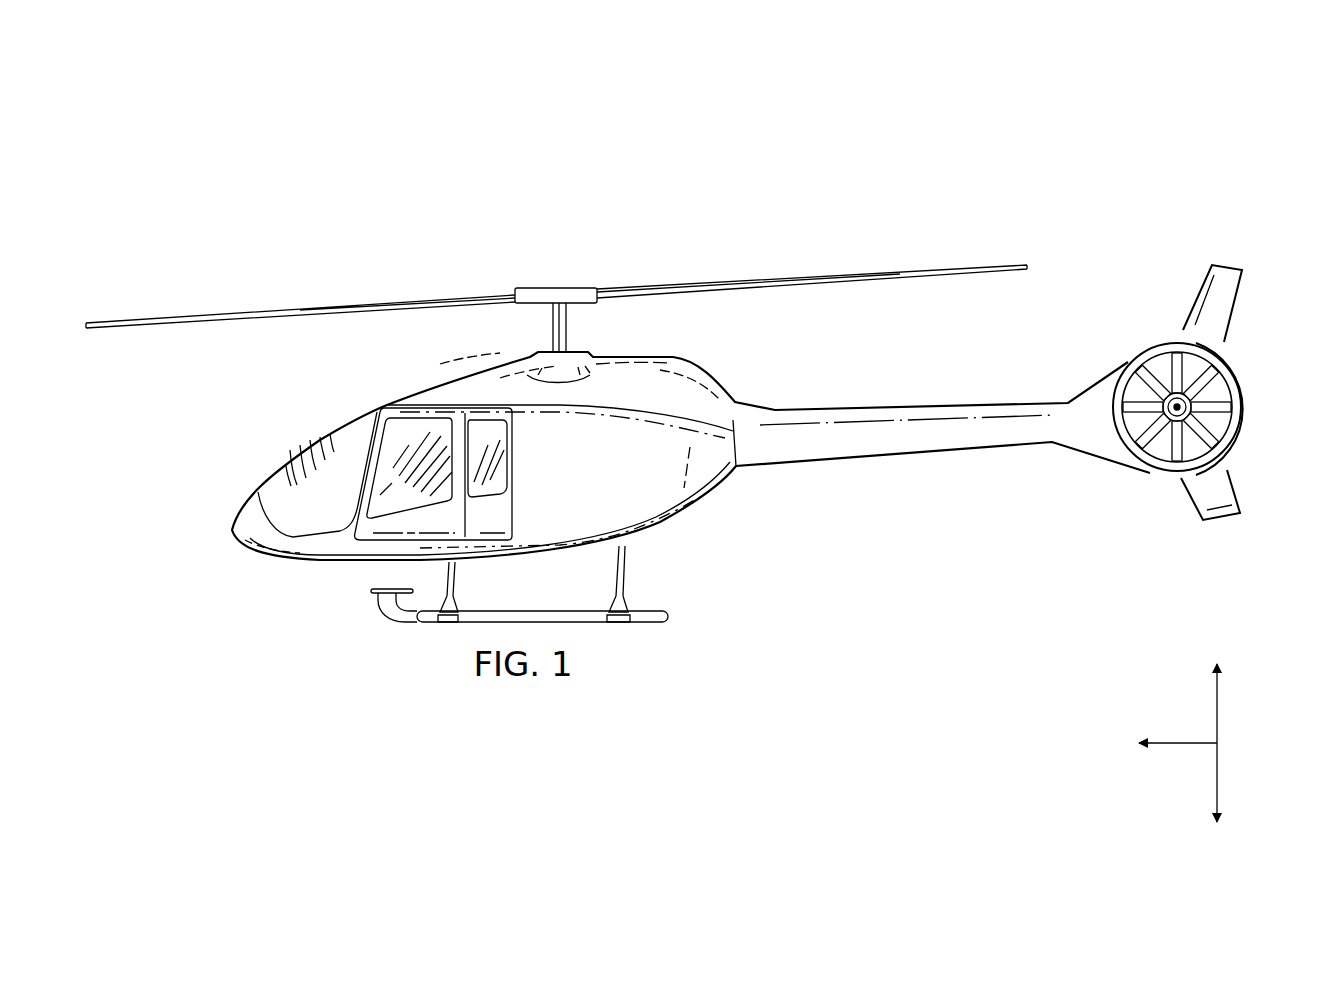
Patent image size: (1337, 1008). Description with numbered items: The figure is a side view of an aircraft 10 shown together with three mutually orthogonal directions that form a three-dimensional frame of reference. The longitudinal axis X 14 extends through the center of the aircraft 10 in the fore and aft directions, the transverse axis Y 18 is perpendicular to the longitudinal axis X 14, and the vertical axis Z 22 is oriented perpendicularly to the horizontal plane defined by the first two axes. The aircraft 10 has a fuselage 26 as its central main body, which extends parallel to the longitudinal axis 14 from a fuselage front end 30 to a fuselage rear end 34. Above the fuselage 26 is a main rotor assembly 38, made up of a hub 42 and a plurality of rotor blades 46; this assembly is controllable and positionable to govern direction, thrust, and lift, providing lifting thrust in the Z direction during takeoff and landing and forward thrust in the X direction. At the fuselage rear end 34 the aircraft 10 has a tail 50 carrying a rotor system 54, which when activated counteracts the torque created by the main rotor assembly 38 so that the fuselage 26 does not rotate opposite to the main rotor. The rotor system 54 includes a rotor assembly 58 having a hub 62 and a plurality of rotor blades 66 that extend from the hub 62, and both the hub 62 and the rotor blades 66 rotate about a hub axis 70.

The aircraft 10 is at (294, 159).
The longitudinal axis X 14 is at (1182, 740).
The transverse axis Y 18 is at (1218, 778).
The vertical axis Z 22 is at (1218, 708).
The fuselage 26 is at (652, 546).
The fuselage front end 30 is at (242, 563).
The fuselage rear end 34 is at (1102, 543).
The main rotor assembly 38 is at (531, 264).
The hub 42 is at (566, 286).
The rotor blades 46 is at (267, 311).
The tail 50 is at (1117, 286).
The rotor system 54 is at (1227, 367).
The rotor assembly 58 is at (1143, 359).
The hub 62 is at (1212, 404).
The rotor blades 66 is at (1167, 357).
The hub axis 70 is at (1128, 385).